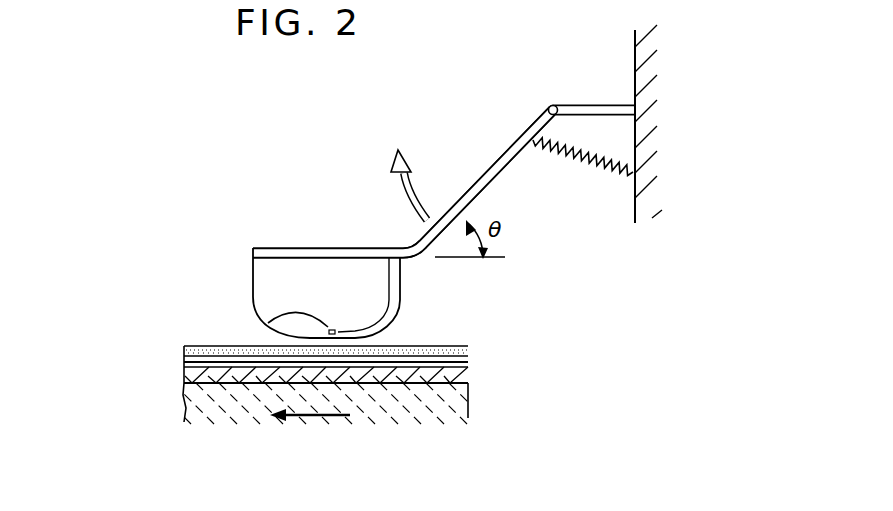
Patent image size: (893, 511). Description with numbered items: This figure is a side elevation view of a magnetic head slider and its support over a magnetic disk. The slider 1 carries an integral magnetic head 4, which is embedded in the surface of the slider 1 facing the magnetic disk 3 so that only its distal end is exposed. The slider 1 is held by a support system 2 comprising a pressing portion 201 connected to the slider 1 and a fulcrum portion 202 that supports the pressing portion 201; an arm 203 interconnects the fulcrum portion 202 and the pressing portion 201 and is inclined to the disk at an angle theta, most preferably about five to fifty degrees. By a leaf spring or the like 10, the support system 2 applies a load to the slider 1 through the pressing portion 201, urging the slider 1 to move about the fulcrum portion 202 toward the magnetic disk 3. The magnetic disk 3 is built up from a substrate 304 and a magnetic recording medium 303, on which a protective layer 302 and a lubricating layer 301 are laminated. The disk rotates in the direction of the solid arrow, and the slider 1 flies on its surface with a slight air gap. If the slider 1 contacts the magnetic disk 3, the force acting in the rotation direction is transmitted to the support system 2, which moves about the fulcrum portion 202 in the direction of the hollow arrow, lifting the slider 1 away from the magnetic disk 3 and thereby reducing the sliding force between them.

The slider 1 is at (265, 293).
The support system 2 is at (444, 175).
The magnetic disk 3 is at (329, 405).
The magnetic head 4 is at (273, 321).
The leaf spring 10 is at (602, 172).
The pressing portion 201 is at (325, 247).
The fulcrum portion 202 is at (551, 105).
The arm 203 is at (485, 175).
The lubricating layer 301 is at (467, 350).
The protective layer 302 is at (468, 362).
The magnetic recording medium 303 is at (468, 378).
The substrate 304 is at (450, 408).